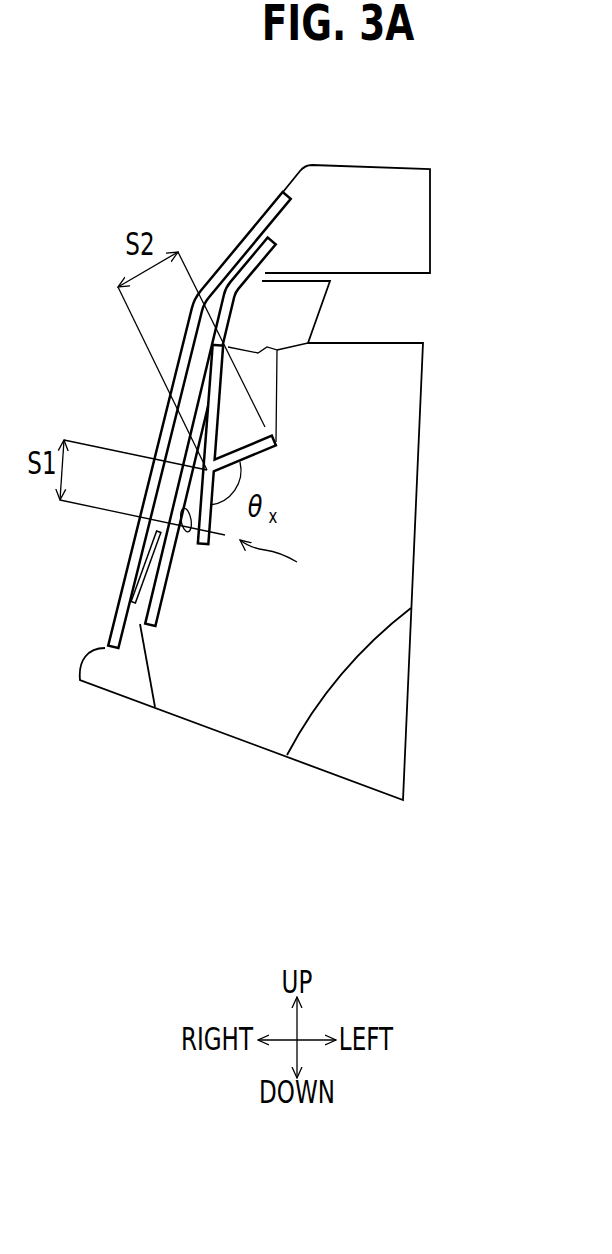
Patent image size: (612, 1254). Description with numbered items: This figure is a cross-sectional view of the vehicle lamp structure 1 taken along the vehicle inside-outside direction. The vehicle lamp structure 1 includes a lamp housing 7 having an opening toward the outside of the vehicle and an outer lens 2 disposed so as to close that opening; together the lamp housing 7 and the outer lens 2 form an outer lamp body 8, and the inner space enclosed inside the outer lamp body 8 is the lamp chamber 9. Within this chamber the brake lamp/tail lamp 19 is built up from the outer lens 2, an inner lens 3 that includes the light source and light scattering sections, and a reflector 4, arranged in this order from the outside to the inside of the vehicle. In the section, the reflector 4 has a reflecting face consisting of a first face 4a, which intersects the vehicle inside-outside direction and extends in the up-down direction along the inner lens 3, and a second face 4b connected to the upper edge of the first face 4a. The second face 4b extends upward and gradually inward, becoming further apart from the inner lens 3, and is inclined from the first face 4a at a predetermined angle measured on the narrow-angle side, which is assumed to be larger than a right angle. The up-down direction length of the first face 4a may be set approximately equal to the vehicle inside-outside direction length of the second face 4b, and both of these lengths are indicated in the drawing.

The vehicle lamp structure 1 is at (301, 421).
The outer lens 2 is at (282, 197).
The inner lens 3 is at (160, 626).
The reflector 4 is at (256, 486).
The first face 4a is at (192, 535).
The second face 4b is at (268, 428).
The lamp housing 7 is at (380, 167).
The outer lamp body 8 is at (424, 433).
The lamp chamber 9 is at (335, 401).
The brake lamp/tail lamp 19 is at (282, 562).